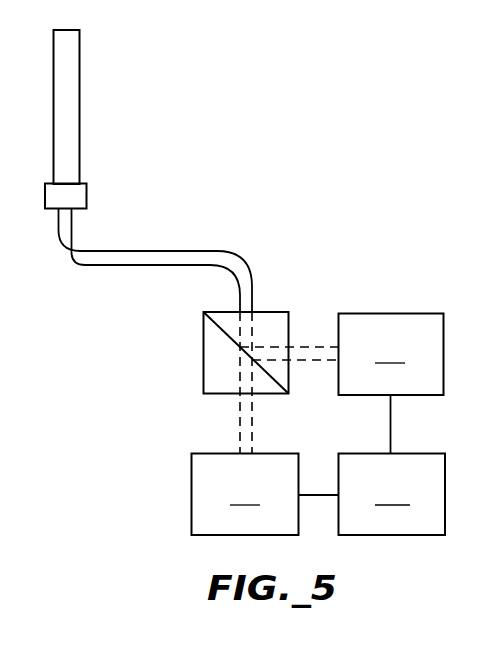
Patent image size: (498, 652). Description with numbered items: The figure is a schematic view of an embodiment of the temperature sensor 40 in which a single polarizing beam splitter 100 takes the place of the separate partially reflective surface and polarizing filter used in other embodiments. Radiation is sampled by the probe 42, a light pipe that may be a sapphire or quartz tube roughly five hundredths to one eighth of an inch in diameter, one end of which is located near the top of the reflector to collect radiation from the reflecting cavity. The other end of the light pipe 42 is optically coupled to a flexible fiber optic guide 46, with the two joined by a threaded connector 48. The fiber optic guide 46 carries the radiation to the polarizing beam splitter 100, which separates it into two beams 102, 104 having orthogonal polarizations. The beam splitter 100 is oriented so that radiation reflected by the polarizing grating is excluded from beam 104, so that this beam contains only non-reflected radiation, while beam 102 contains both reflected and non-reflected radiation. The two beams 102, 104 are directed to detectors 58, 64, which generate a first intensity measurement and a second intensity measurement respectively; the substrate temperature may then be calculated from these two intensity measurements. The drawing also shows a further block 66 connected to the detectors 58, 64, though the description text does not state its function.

The temperature sensor 40 is at (297, 130).
The probe 42 is at (70, 122).
The flexible fiber optic guide 46 is at (165, 250).
The threaded connector 48 is at (78, 195).
The detector 58 is at (245, 495).
The detector 64 is at (391, 355).
The controller 66 is at (392, 495).
The polarizing beam splitter 100 is at (267, 310).
The beam 102 is at (233, 435).
The beam 104 is at (300, 347).